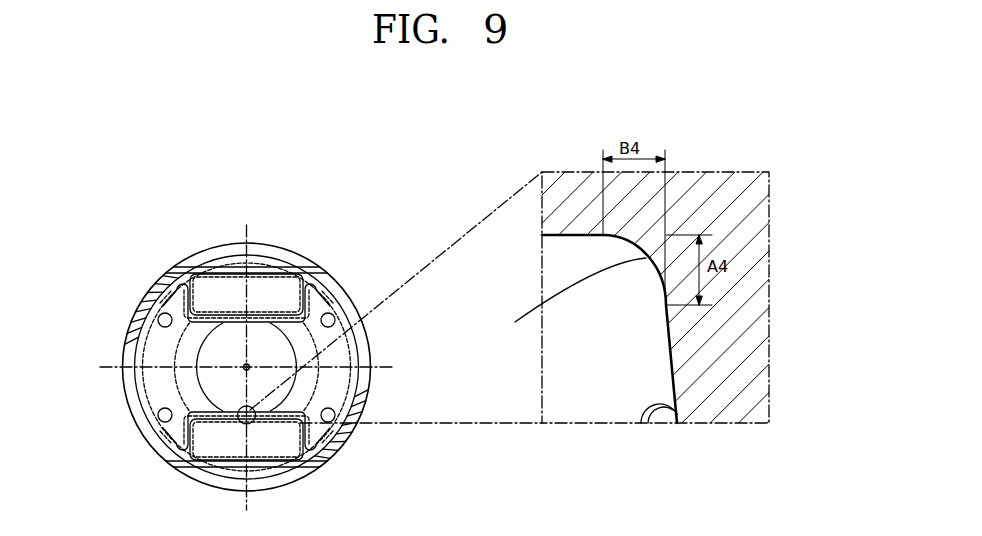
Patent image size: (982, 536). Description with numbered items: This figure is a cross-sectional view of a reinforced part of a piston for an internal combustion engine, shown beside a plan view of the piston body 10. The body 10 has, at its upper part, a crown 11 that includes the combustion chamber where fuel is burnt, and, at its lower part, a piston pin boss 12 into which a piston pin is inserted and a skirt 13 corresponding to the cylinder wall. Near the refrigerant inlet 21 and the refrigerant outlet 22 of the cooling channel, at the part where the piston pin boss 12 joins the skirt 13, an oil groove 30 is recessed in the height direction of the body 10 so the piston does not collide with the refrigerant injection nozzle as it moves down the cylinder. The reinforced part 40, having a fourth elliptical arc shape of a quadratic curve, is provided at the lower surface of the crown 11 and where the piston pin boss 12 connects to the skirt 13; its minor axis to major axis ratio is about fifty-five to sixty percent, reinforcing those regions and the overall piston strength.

The body 10 is at (358, 242).
The crown 11 is at (292, 262).
The piston pin boss 12 is at (261, 292).
The skirt 13 is at (137, 403).
The refrigerant inlet 21 is at (161, 314).
The refrigerant outlet 22 is at (336, 412).
The oil groove 30 is at (136, 312).
The reinforced part 40 is at (460, 319).